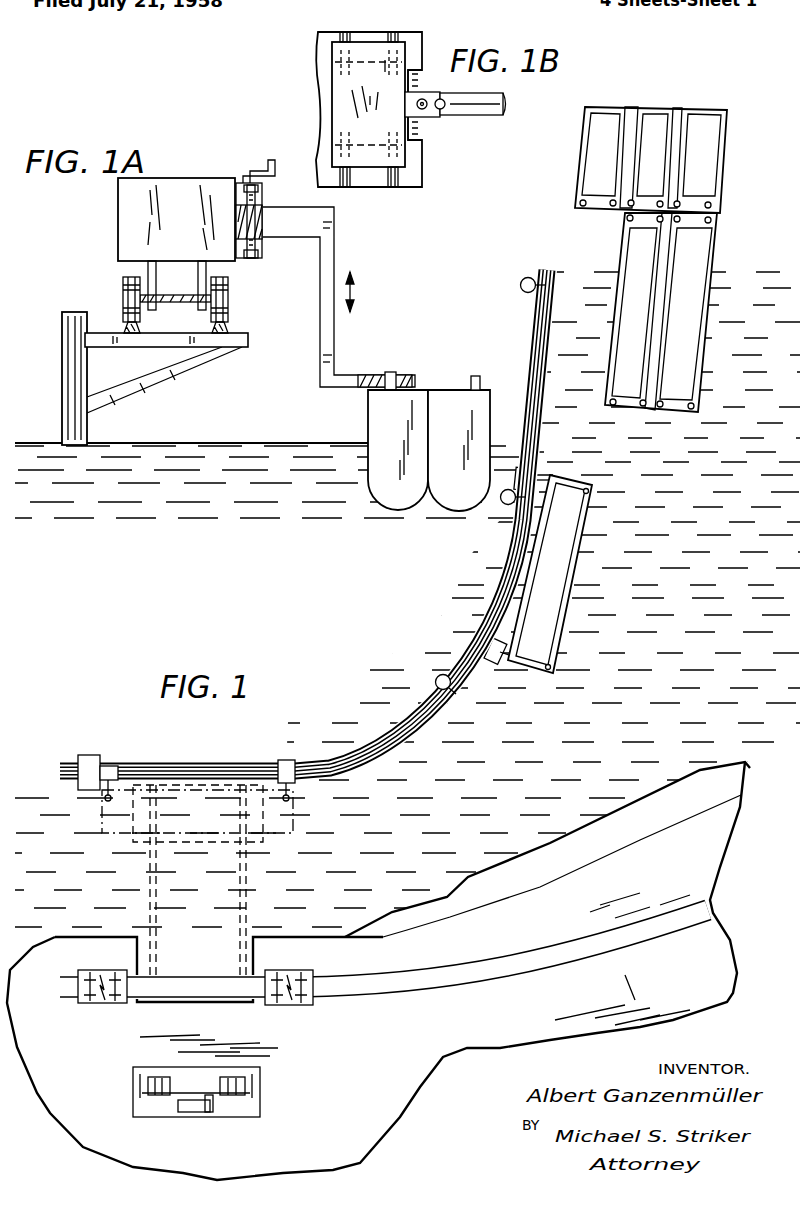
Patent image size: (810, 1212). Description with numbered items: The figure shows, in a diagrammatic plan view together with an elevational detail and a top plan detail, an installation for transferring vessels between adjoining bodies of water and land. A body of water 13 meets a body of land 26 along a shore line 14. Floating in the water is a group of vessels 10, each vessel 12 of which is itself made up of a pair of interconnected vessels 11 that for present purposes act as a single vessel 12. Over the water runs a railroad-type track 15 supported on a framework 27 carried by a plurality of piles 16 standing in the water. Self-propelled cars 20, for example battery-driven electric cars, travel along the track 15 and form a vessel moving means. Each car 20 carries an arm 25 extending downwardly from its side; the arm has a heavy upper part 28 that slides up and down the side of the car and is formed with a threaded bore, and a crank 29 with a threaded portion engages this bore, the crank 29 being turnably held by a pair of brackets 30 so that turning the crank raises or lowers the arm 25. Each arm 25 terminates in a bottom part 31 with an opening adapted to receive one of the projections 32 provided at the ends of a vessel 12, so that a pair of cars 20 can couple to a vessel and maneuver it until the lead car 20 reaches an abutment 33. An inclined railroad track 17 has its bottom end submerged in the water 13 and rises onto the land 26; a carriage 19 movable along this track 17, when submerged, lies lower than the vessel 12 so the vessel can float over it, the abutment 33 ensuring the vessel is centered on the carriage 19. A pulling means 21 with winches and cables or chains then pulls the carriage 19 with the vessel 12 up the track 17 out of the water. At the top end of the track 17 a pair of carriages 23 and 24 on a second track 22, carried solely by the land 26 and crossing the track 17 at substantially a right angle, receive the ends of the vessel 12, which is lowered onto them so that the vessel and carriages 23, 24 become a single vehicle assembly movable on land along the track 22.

In FIG. 1, the group of vessels 10 is at (594, 167).
In FIG. 1, the interconnected vessels 11 is at (397, 446).
In FIG. 1, the vessel 12 is at (575, 548).
In FIG. 1, the body of water 13 is at (668, 683).
In FIG. 1, the shore line 14 is at (545, 872).
In FIG. 1, the track 15 is at (408, 744).
In FIG. 1, the piles 16 is at (519, 286).
In FIG. 1A, the piles 16 is at (232, 346).
In FIG. 1, the inclined railroad track 17 is at (245, 905).
In FIG. 1, the carriage 19 is at (133, 841).
In FIG. 1A, the cars 20 is at (125, 220).
In FIG. 1B, the cars 20 is at (340, 102).
In FIG. 1, the pulling means 21 is at (262, 1102).
In FIG. 1, the second track 22 is at (518, 978).
In FIG. 1, the carriage 23 is at (94, 1008).
In FIG. 1, the carriage 24 is at (290, 1008).
In FIG. 1, the arm 25 is at (334, 249).
In FIG. 1, the body of land 26 is at (663, 991).
In FIG. 1A, the framework 27 is at (150, 378).
In FIG. 1, the upper part of arm 28 is at (318, 216).
In FIG. 1B, the upper part of arm 28 is at (418, 95).
In FIG. 1A, the crank 29 is at (262, 172).
In FIG. 1B, the crank 29 is at (444, 110).
In FIG. 1A, the brackets 30 is at (262, 188).
In FIG. 1B, the brackets 30 is at (420, 130).
In FIG. 1, the bottom end part of arm 31 is at (378, 362).
In FIG. 1, the projections 32 is at (392, 374).
In FIG. 1, the abutment 33 is at (88, 764).